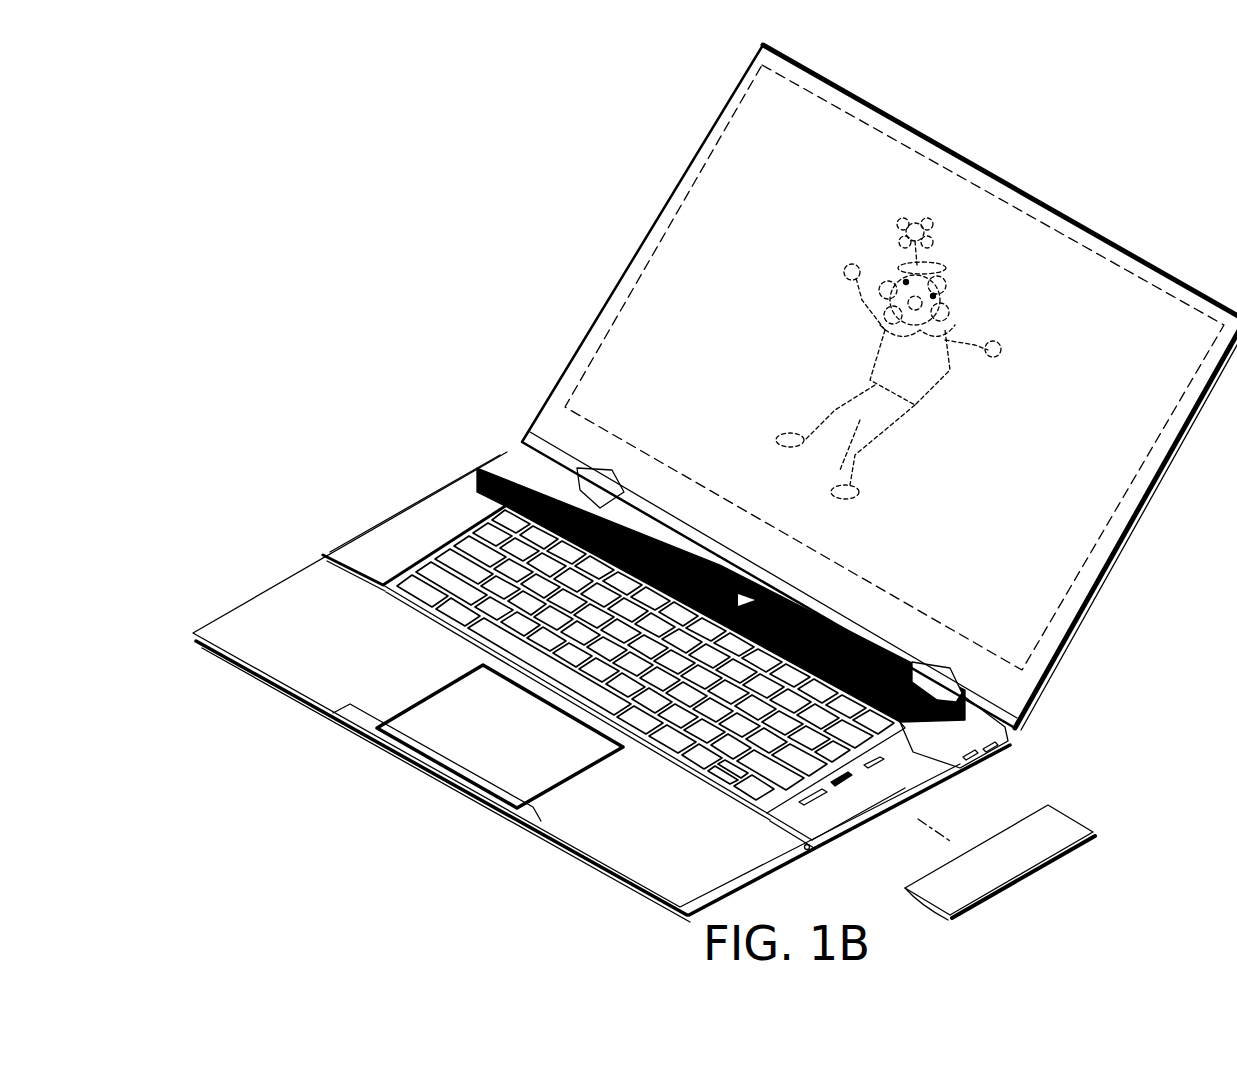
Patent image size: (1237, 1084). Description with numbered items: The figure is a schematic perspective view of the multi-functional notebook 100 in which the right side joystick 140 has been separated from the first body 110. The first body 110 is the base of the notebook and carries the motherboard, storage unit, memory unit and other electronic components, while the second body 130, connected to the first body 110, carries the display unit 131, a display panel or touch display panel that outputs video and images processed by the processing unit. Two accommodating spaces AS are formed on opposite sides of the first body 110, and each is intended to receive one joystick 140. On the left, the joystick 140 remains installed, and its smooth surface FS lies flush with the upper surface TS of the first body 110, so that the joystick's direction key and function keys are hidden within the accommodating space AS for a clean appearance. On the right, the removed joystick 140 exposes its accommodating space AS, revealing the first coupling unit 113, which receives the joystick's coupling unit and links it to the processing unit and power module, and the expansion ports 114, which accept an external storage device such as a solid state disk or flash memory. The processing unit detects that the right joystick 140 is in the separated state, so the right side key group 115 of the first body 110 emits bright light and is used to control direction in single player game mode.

The multi-functional notebook 100 is at (696, 491).
The first body 110 is at (233, 643).
The first coupling unit 113 is at (845, 783).
The expansion port 114 is at (817, 800).
The right side key group 115 is at (645, 740).
The second body 130 is at (879, 387).
The display unit 131 is at (710, 230).
The joystick 140 is at (393, 540).
The smooth surface FS is at (450, 503).
The upper surface TS is at (682, 845).
The accommodating space AS is at (918, 772).